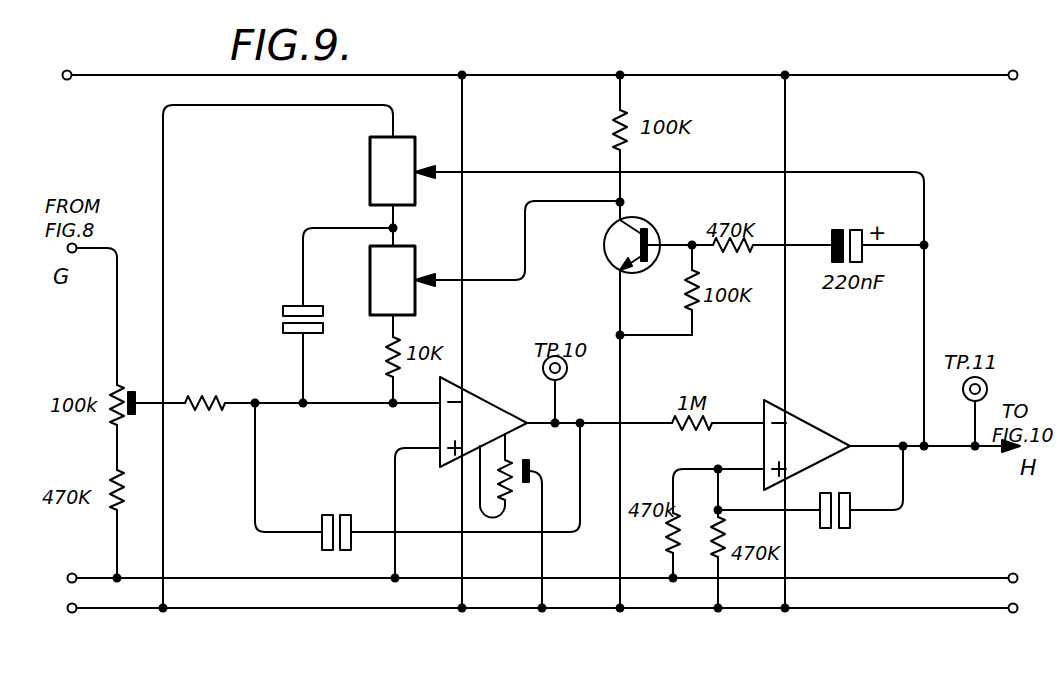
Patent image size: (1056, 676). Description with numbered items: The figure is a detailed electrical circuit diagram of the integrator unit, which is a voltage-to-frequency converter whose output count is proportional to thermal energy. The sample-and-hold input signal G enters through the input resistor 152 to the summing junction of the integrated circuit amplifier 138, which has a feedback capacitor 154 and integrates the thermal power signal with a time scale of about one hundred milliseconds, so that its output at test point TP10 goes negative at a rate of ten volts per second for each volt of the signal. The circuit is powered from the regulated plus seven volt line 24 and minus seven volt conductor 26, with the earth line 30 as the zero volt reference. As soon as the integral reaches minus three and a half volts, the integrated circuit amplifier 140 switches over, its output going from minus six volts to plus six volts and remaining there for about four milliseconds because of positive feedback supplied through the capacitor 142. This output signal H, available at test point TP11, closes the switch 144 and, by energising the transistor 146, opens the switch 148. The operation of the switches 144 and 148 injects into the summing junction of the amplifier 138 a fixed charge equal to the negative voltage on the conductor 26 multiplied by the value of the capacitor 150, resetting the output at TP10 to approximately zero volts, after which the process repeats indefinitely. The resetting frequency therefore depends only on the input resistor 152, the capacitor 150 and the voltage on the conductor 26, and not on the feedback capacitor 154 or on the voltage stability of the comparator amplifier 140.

The +7 volt line 24 is at (128, 76).
The -7 volt line 26 is at (219, 607).
The earth line 30 is at (186, 575).
The integrated circuit amplifier 138 is at (438, 424).
The integrated circuit amplifier 140 is at (812, 445).
The capacitor 142 is at (852, 521).
The switch 144 is at (370, 157).
The transistor 146 is at (612, 233).
The switch 148 is at (385, 280).
The capacitor 150 is at (288, 304).
The input resistor 152 is at (222, 390).
The feedback capacitor 154 is at (320, 545).